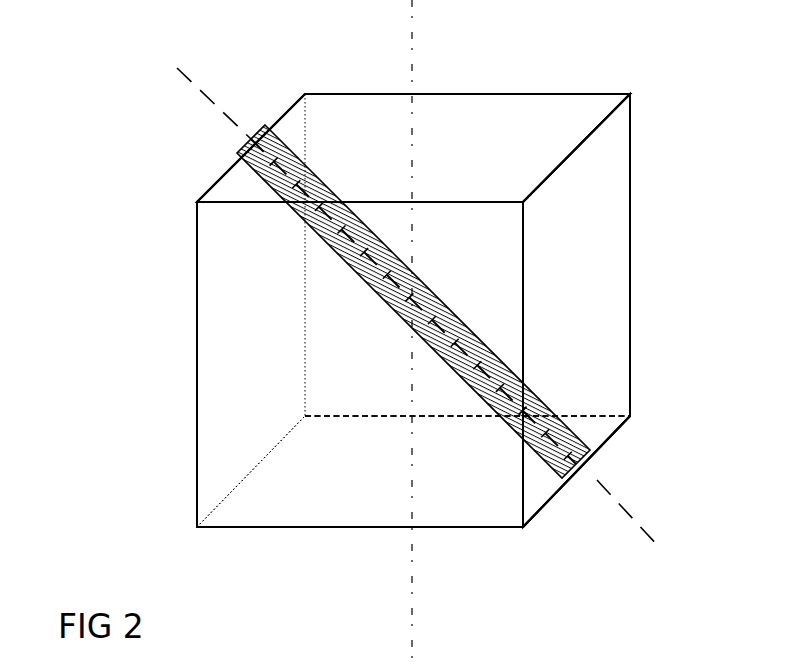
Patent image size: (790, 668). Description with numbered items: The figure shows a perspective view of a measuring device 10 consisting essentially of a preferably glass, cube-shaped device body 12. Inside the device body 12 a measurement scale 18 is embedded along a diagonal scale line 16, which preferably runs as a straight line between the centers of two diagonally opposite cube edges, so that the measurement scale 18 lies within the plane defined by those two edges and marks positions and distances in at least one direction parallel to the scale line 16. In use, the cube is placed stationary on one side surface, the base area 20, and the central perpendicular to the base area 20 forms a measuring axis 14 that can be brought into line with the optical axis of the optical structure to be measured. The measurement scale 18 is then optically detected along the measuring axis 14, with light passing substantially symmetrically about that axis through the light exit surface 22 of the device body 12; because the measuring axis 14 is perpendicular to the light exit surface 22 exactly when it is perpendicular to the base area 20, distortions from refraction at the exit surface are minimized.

The measuring device 10 is at (691, 132).
The device body 12 is at (594, 314).
The measuring axis 14 is at (413, 35).
The scale line 16 is at (611, 491).
The measurement scale 18 is at (433, 295).
The base area 20 is at (363, 492).
The light exit surface 22 is at (501, 102).